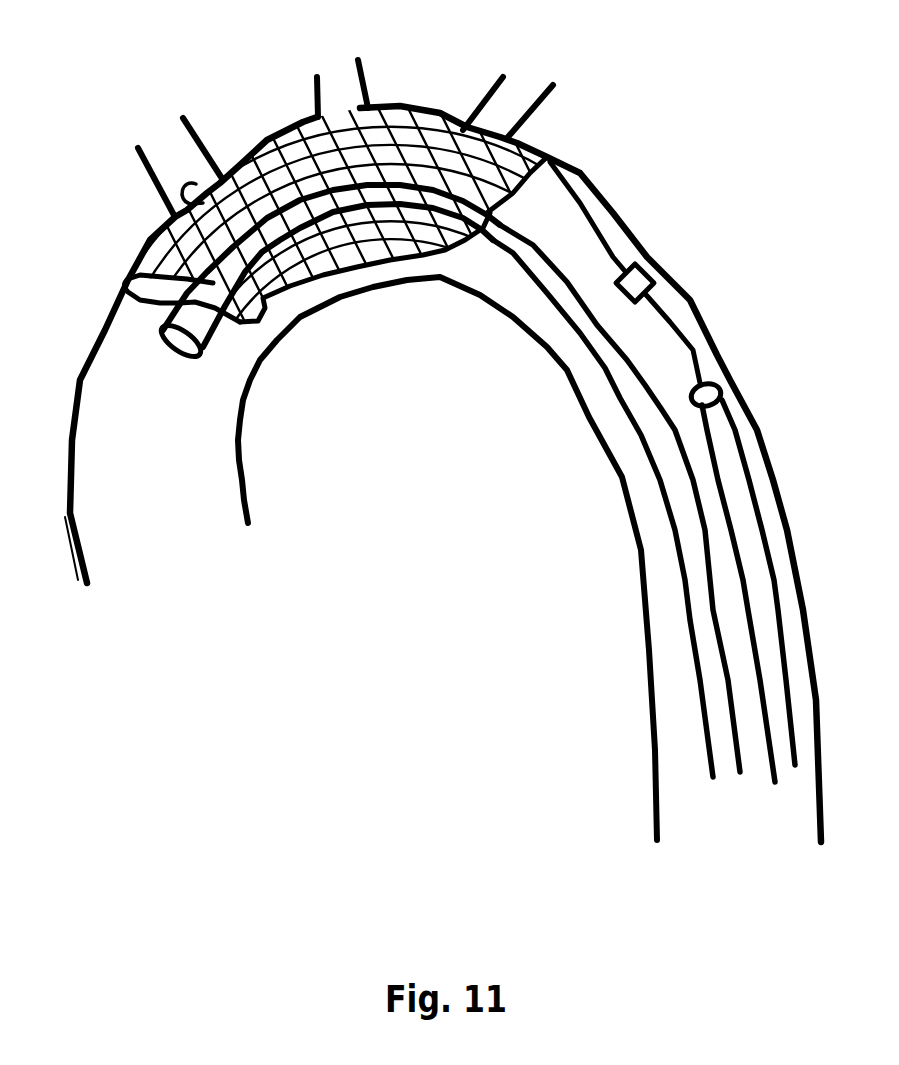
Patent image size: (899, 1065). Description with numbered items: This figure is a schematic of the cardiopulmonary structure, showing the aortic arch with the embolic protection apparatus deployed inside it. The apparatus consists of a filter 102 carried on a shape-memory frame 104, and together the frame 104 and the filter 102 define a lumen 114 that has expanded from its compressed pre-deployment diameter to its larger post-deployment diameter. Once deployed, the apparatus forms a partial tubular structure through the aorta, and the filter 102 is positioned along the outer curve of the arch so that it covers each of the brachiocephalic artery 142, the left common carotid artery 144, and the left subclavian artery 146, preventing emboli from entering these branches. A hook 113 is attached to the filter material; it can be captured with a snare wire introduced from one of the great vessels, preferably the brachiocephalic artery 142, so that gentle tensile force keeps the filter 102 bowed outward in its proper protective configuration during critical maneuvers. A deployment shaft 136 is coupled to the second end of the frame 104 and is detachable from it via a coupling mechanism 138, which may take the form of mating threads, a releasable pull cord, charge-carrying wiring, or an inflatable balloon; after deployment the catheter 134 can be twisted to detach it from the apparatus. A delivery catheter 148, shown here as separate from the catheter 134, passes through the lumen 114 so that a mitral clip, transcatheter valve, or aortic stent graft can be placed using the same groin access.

The filter 102 is at (283, 147).
The frame 104 is at (330, 285).
The hook 113 is at (185, 188).
The lumen 114 is at (158, 287).
The catheter shaft 134 is at (740, 470).
The deployment shaft 136 is at (683, 330).
The coupling mechanism 138 is at (647, 268).
The brachiocephalic artery 142 is at (158, 137).
The left common carotid artery 144 is at (332, 57).
The left subclavian artery 146 is at (522, 80).
The delivery catheter 148 is at (627, 403).